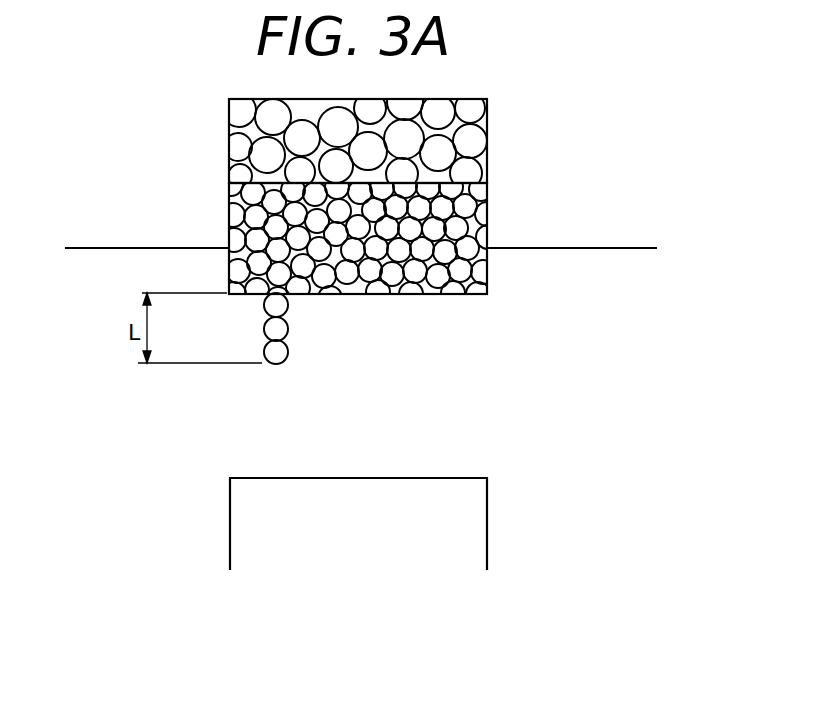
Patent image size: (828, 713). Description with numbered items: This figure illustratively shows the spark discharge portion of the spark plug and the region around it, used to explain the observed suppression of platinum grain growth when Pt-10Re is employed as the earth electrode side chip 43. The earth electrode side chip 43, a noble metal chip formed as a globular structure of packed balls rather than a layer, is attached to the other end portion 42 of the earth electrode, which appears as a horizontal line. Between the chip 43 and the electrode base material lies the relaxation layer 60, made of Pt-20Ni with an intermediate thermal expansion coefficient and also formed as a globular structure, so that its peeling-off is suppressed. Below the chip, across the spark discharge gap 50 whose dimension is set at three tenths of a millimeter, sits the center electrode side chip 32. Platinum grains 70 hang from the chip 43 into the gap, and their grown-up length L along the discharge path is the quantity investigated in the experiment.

The relaxation layer 60 is at (487, 123).
The earth electrode side chip 43 is at (487, 267).
The other end portion of the earth electrode 42 is at (605, 223).
The platinum grains 70 is at (276, 364).
The spark discharge gap 50 is at (382, 397).
The center electrode side chip 32 is at (442, 525).